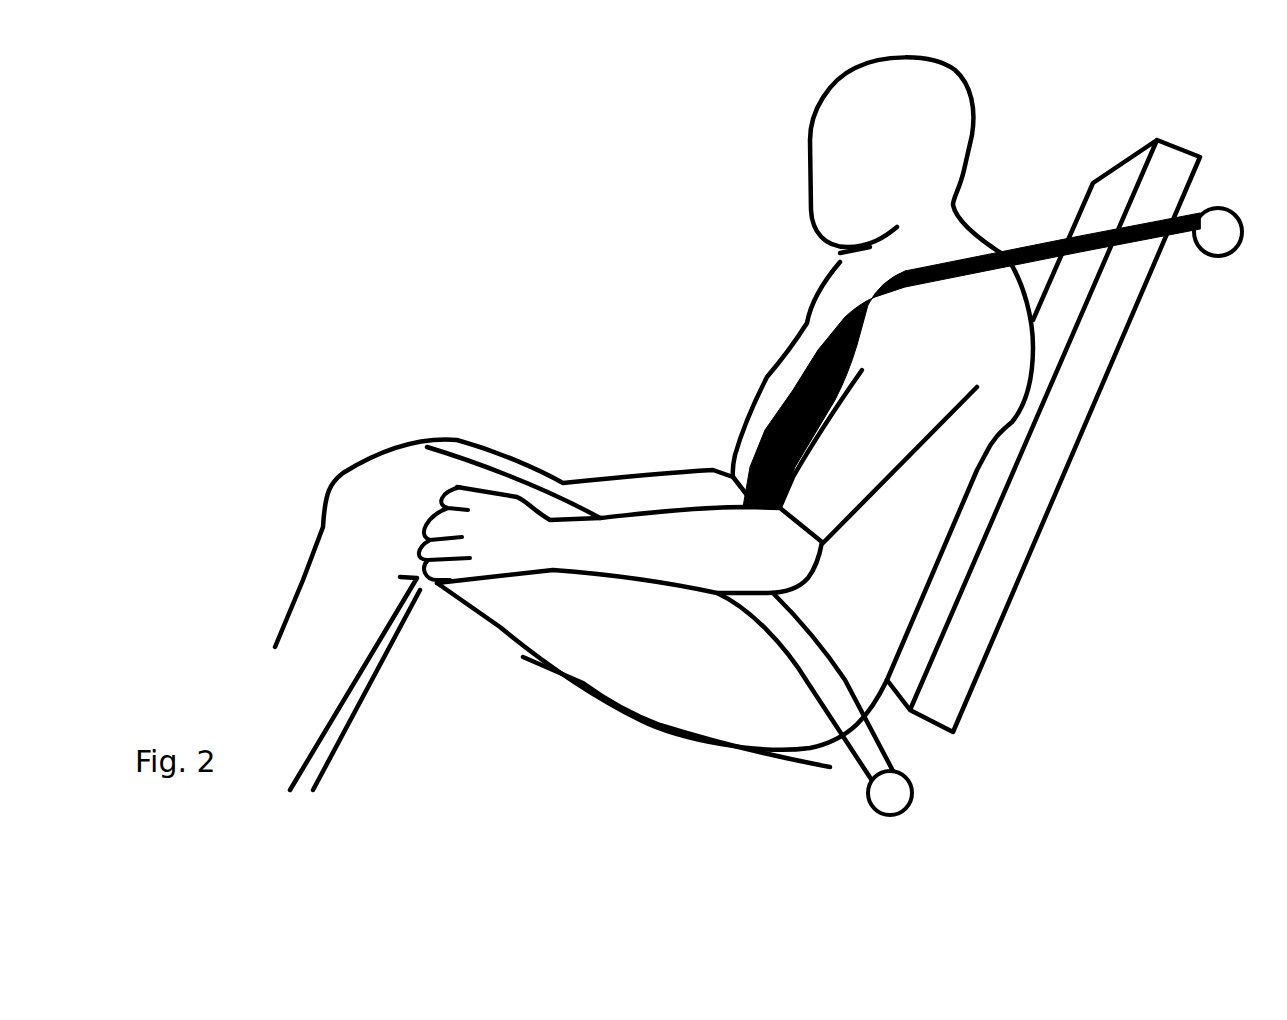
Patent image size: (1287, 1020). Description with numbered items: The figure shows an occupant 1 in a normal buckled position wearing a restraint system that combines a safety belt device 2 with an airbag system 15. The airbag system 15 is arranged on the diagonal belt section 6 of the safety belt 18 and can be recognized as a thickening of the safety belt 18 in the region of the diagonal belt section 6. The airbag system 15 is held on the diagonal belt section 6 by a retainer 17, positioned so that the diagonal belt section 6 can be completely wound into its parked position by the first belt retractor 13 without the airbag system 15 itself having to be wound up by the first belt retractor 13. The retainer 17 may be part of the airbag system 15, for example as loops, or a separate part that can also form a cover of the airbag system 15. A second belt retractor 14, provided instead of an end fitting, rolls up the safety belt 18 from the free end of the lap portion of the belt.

The occupant 1 is at (757, 423).
The safety belt device 2 is at (1050, 206).
The diagonal belt section 6 is at (845, 317).
The first belt retractor 13 is at (1220, 220).
The second belt retractor 14 is at (898, 787).
The airbag system 15 is at (793, 390).
The retainer 17 is at (843, 360).
The safety belt 18 is at (1093, 248).